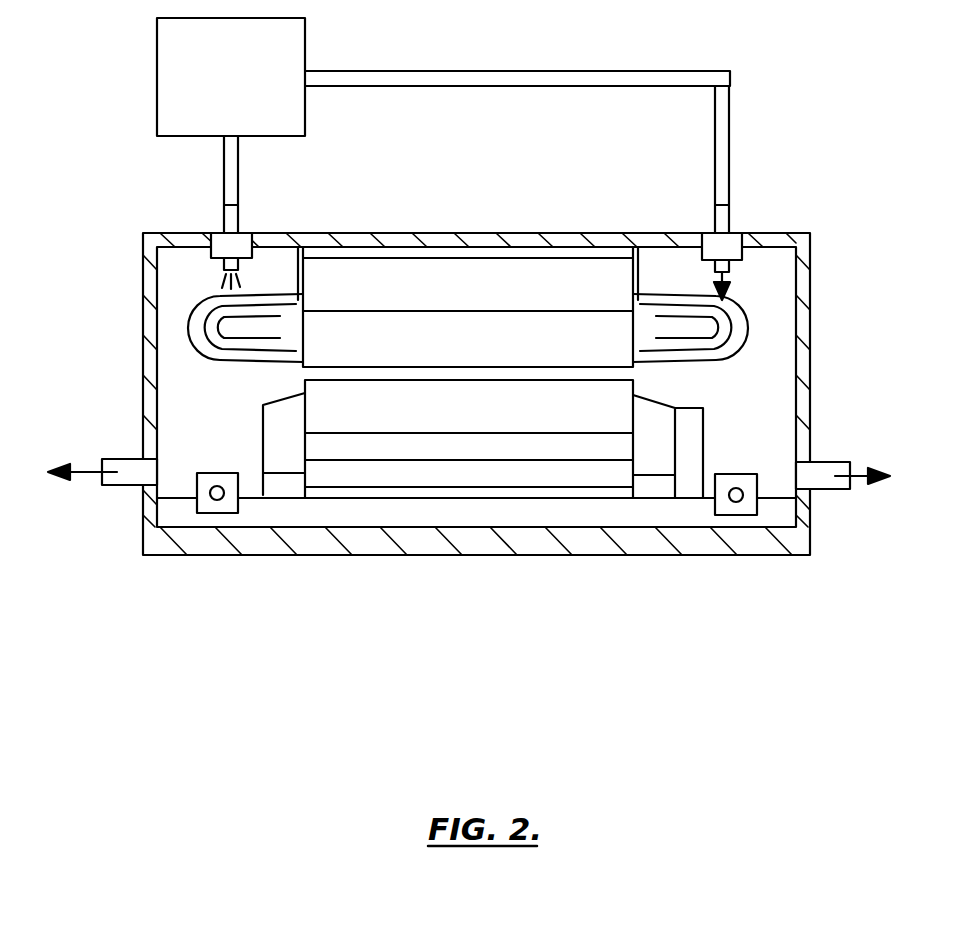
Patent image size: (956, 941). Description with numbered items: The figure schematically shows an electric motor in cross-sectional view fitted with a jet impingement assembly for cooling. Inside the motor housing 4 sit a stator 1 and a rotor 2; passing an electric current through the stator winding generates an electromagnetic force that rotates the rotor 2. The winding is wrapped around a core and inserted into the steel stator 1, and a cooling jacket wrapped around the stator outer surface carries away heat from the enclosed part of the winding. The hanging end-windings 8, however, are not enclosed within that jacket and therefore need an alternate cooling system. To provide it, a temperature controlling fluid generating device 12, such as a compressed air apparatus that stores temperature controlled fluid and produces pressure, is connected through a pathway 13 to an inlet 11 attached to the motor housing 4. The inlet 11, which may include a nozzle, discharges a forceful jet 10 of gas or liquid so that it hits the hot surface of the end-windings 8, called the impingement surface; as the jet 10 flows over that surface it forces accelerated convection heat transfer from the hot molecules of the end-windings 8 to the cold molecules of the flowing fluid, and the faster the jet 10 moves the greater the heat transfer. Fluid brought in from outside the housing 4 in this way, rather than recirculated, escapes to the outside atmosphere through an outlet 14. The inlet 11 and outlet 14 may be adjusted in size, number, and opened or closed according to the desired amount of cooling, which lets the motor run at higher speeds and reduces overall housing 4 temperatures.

The stator 1 is at (497, 288).
The rotor 2 is at (512, 395).
The motor housing 4 is at (143, 283).
The end-windings 8 is at (197, 353).
The jet 10 is at (240, 283).
The inlet 11 is at (222, 234).
The temperature controlling fluid generating device 12 is at (157, 94).
The pathway 13 is at (240, 163).
The outlet 14 is at (116, 486).